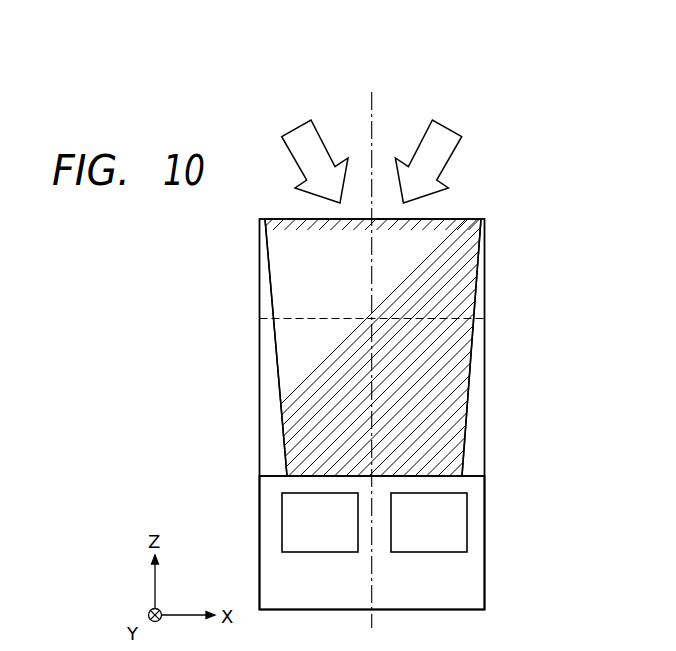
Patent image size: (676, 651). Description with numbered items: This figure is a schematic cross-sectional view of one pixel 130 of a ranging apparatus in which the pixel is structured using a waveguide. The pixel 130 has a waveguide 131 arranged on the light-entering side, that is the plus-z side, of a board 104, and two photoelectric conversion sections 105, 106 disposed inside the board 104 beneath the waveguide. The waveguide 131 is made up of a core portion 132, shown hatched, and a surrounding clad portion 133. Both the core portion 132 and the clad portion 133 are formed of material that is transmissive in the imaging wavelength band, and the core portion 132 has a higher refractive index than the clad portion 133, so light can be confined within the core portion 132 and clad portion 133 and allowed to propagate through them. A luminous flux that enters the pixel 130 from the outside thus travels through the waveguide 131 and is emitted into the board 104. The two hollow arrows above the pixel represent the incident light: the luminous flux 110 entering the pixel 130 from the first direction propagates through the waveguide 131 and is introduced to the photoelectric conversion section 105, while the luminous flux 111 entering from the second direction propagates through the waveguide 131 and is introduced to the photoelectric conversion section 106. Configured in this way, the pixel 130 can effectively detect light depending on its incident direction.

The board 104 is at (440, 582).
The photoelectric conversion section 105 is at (307, 523).
The photoelectric conversion section 106 is at (440, 523).
The luminous flux 110 is at (443, 137).
The luminous flux 111 is at (300, 137).
The pixel 130 is at (488, 202).
The waveguide 131 is at (472, 332).
The core portion 132 is at (300, 263).
The clad portion 133 is at (265, 397).